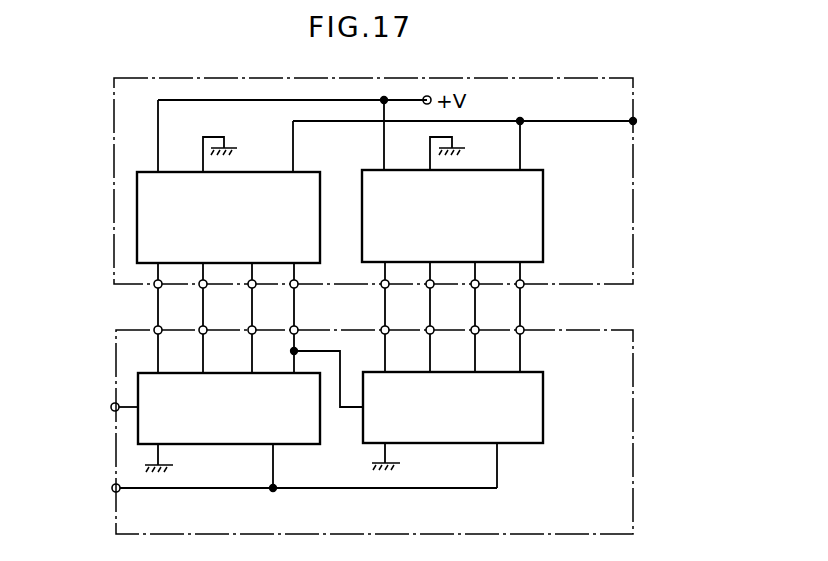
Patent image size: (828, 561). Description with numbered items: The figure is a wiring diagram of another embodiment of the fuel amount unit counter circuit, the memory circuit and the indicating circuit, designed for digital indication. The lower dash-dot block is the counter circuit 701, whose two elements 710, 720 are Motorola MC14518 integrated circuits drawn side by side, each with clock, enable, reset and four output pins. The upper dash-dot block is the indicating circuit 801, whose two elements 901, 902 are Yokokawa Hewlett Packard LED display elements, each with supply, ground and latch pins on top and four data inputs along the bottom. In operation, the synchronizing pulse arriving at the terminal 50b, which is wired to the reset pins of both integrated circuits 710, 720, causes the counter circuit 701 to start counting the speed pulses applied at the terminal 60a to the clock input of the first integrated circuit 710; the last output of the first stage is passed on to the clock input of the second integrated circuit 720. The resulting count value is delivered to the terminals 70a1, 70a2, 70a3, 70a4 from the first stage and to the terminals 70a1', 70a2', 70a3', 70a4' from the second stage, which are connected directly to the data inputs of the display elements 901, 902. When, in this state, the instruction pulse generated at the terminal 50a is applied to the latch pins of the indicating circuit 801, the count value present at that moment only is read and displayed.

The indicating circuit 801 is at (634, 197).
The counter circuit 701 is at (634, 378).
The LED display element 901 is at (320, 192).
The LED display element 902 is at (543, 193).
The integrated circuit 710 is at (258, 444).
The integrated circuit 720 is at (543, 390).
The terminal 50a is at (654, 118).
The terminal 50b is at (114, 484).
The terminal 60a is at (113, 403).
The terminal 70a1 is at (132, 318).
The terminal 70a2 is at (149, 318).
The terminal 70a3 is at (298, 318).
The terminal 70a4 is at (326, 318).
The terminal 70a1' is at (403, 317).
The terminal 70a2' is at (449, 317).
The terminal 70a3' is at (534, 317).
The terminal 70a4' is at (550, 317).